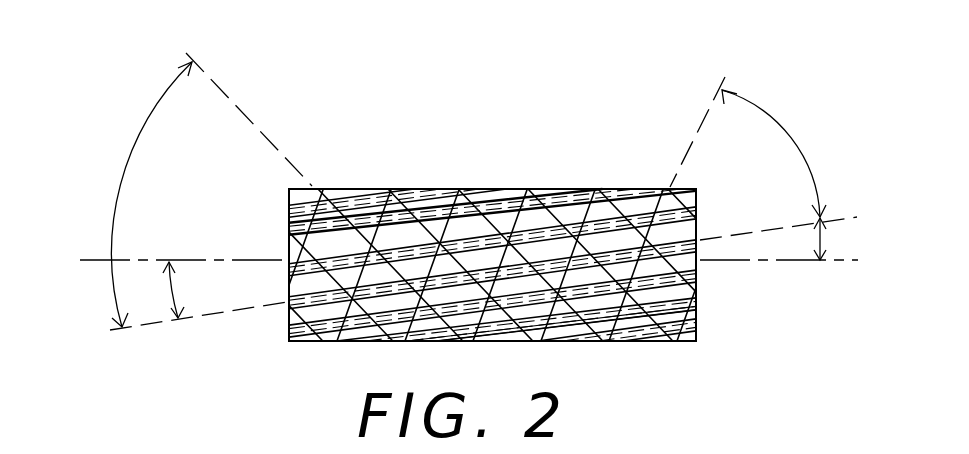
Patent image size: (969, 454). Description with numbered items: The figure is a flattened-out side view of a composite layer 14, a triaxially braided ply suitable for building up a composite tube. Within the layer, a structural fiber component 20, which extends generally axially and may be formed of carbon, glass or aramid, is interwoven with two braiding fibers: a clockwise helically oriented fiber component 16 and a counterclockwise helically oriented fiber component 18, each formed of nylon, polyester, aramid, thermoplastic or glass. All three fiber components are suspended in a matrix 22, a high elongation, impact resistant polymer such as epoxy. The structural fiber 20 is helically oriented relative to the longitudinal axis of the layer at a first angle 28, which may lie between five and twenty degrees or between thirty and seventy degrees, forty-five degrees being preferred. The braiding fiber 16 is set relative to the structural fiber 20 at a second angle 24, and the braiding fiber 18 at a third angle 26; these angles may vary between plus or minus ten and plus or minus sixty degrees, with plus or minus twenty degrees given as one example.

The composite layer 14 is at (507, 163).
The clockwise helically oriented fiber component 16 is at (385, 245).
The counterclockwise helically oriented fiber component 18 is at (640, 226).
The fiber component 20 is at (373, 290).
The matrix 22 is at (525, 333).
The second angle 24 is at (137, 138).
The third angle 26 is at (791, 141).
The first angle 28 is at (176, 297).